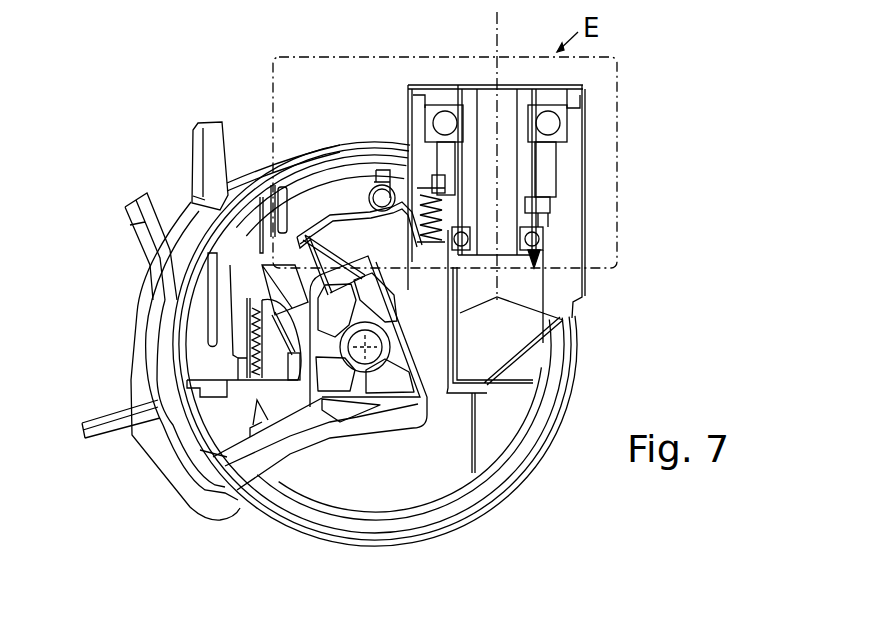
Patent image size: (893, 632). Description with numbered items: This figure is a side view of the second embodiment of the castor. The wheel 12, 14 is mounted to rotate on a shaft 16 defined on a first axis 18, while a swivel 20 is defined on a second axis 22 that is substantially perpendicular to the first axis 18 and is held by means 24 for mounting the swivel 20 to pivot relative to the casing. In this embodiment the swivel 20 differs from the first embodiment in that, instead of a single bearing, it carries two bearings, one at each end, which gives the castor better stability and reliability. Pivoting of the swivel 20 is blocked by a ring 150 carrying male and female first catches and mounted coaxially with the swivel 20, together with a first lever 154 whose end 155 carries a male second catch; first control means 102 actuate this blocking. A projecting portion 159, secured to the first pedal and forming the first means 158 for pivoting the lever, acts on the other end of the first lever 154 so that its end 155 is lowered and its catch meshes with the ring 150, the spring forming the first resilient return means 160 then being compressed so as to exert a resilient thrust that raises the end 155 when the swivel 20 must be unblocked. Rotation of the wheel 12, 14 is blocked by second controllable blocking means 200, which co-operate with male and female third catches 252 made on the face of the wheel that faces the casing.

The wheel 12 is at (375, 354).
The wheel 14 is at (483, 496).
The shaft 16 is at (370, 360).
The first axis 18 is at (367, 350).
The swivel 20 is at (527, 165).
The second axis 22 is at (494, 42).
The means for mounting the swivel 24 is at (535, 188).
The first control means 102 is at (258, 490).
The ring 150 is at (550, 200).
The first lever 154 is at (347, 262).
The end of the first lever 155 is at (418, 218).
The first means for causing the first lever to pivot 158 is at (310, 240).
The projecting portion 159 is at (268, 322).
The first resilient return means 160 is at (470, 240).
The second controllable blocking means 200 is at (266, 316).
The third catches 252 is at (250, 350).